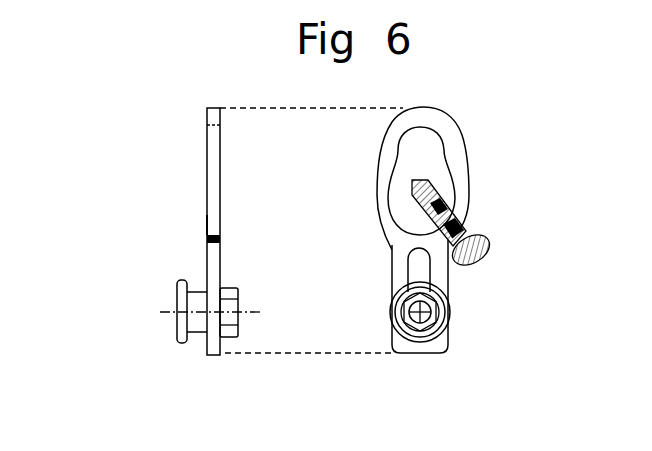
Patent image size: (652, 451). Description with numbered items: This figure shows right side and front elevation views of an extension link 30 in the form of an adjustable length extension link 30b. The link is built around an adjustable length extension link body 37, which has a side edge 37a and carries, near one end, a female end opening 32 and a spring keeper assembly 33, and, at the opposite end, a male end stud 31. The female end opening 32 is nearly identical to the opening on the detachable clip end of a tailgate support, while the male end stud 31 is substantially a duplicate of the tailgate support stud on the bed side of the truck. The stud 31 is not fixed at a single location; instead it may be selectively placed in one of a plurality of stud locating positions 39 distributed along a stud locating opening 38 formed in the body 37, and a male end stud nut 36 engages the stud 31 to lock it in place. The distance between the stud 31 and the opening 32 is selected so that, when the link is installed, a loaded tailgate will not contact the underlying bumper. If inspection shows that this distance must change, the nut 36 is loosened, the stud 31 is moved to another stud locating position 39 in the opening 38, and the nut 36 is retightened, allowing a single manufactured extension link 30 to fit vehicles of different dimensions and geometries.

The extension link 30 is at (233, 163).
The adjustable length extension link 30b is at (480, 205).
The male end stud 31 is at (331, 326).
The female end opening 32 is at (484, 167).
The spring keeper assembly 33 is at (355, 215).
The male end stud nut 36 is at (310, 350).
The adjustable length extension link body 37 is at (322, 159).
The side edge 37a is at (220, 223).
The stud locating opening 38 is at (354, 242).
The stud locating position 39 is at (361, 277).